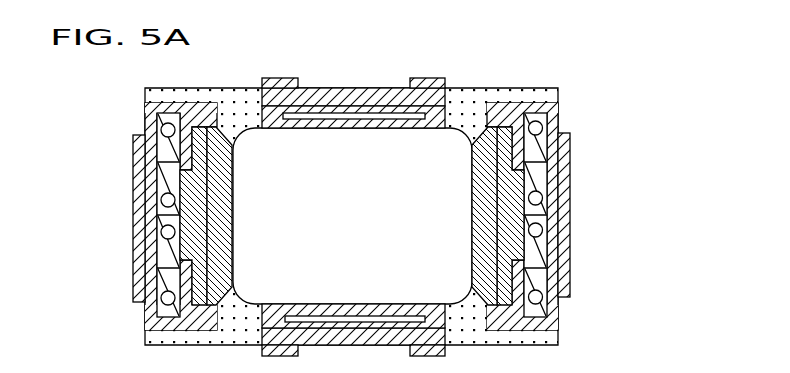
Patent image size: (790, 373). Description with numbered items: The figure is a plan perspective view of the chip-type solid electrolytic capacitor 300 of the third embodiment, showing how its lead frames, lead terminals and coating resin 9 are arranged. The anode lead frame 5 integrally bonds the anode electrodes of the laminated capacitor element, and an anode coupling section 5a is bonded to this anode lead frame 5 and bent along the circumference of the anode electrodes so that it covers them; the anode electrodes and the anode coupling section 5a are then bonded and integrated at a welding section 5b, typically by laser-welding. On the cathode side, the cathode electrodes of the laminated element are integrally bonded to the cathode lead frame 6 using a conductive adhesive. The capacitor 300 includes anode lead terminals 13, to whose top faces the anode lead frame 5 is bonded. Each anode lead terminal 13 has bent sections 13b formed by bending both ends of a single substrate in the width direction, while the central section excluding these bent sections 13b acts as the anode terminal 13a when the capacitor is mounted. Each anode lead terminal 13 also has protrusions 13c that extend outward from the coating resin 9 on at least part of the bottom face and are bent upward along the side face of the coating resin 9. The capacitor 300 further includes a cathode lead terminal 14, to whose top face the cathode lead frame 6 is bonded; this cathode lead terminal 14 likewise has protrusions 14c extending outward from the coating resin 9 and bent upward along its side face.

The chip-type solid electrolytic capacitor 300 is at (362, 200).
The coating resin 9 is at (152, 337).
The cathode lead terminal 14 is at (352, 92).
The protrusions 14c is at (277, 83).
The cathode lead frame 6 is at (445, 105).
The anode lead terminal 13 is at (157, 226).
The anode terminal 13a is at (548, 226).
The bent sections 13b is at (550, 132).
The protrusions 13c is at (135, 167).
The anode lead frame 5 is at (399, 171).
The anode coupling section 5a is at (547, 189).
The welding section 5b is at (560, 257).